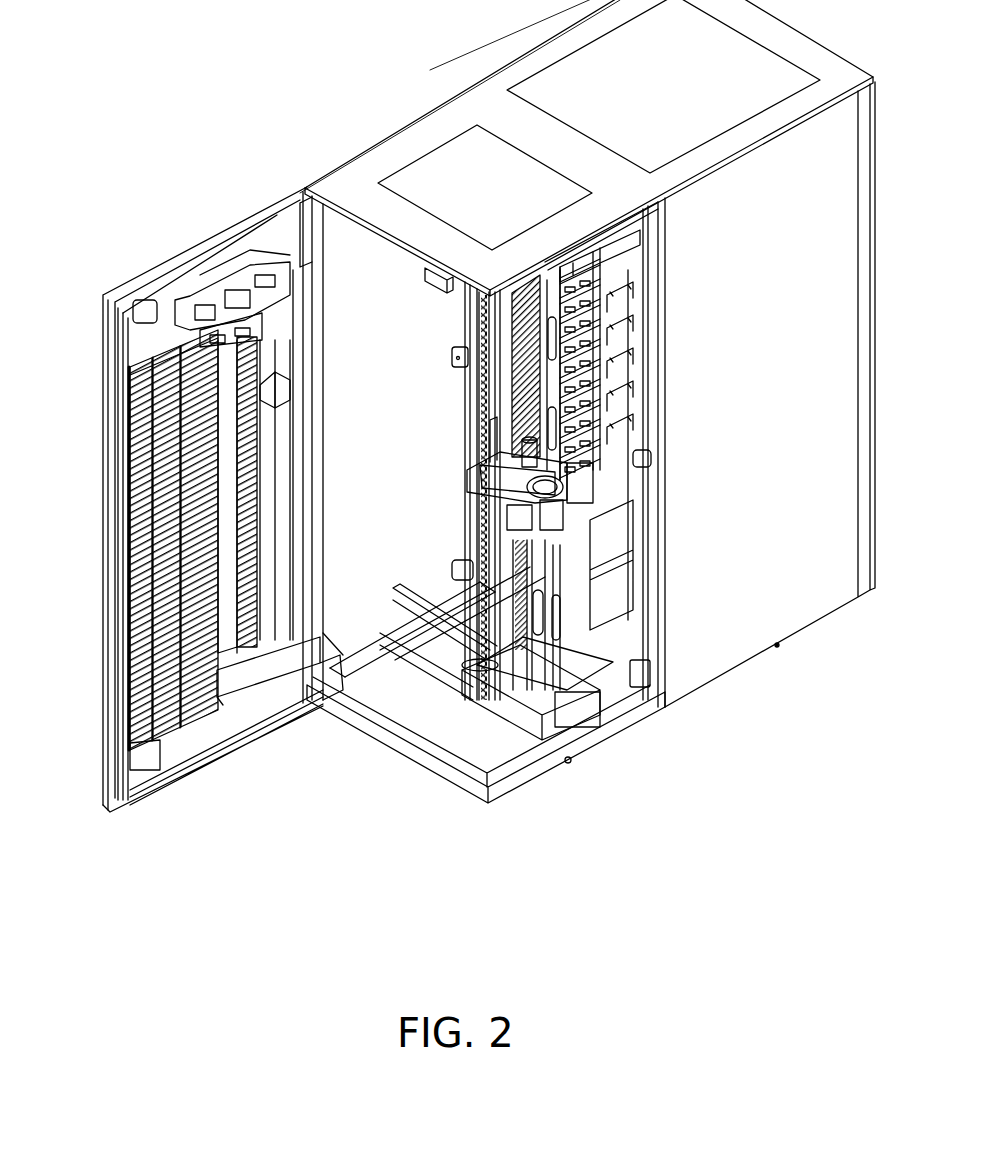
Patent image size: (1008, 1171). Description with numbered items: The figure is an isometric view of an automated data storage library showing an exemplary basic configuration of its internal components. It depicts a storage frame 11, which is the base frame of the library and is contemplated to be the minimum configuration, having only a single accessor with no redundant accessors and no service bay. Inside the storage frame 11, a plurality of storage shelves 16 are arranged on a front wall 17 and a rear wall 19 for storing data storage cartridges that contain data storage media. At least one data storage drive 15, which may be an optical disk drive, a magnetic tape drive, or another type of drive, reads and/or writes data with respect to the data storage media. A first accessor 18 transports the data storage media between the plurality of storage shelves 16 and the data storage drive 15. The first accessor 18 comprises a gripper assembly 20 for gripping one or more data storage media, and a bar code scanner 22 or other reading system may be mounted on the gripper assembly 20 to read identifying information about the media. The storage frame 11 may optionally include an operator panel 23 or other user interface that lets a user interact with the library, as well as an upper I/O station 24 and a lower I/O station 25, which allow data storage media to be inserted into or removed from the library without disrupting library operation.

The storage frame 11 is at (369, 812).
The data storage drive 15 is at (620, 288).
The storage shelves 16 is at (130, 622).
The front wall 17 is at (117, 472).
The first accessor 18 is at (528, 713).
The rear wall 19 is at (465, 328).
The gripper assembly 20 is at (630, 520).
The bar code scanner 22 is at (513, 533).
The operator panel 23 is at (280, 300).
The upper I/O station 24 is at (257, 340).
The lower I/O station 25 is at (260, 525).